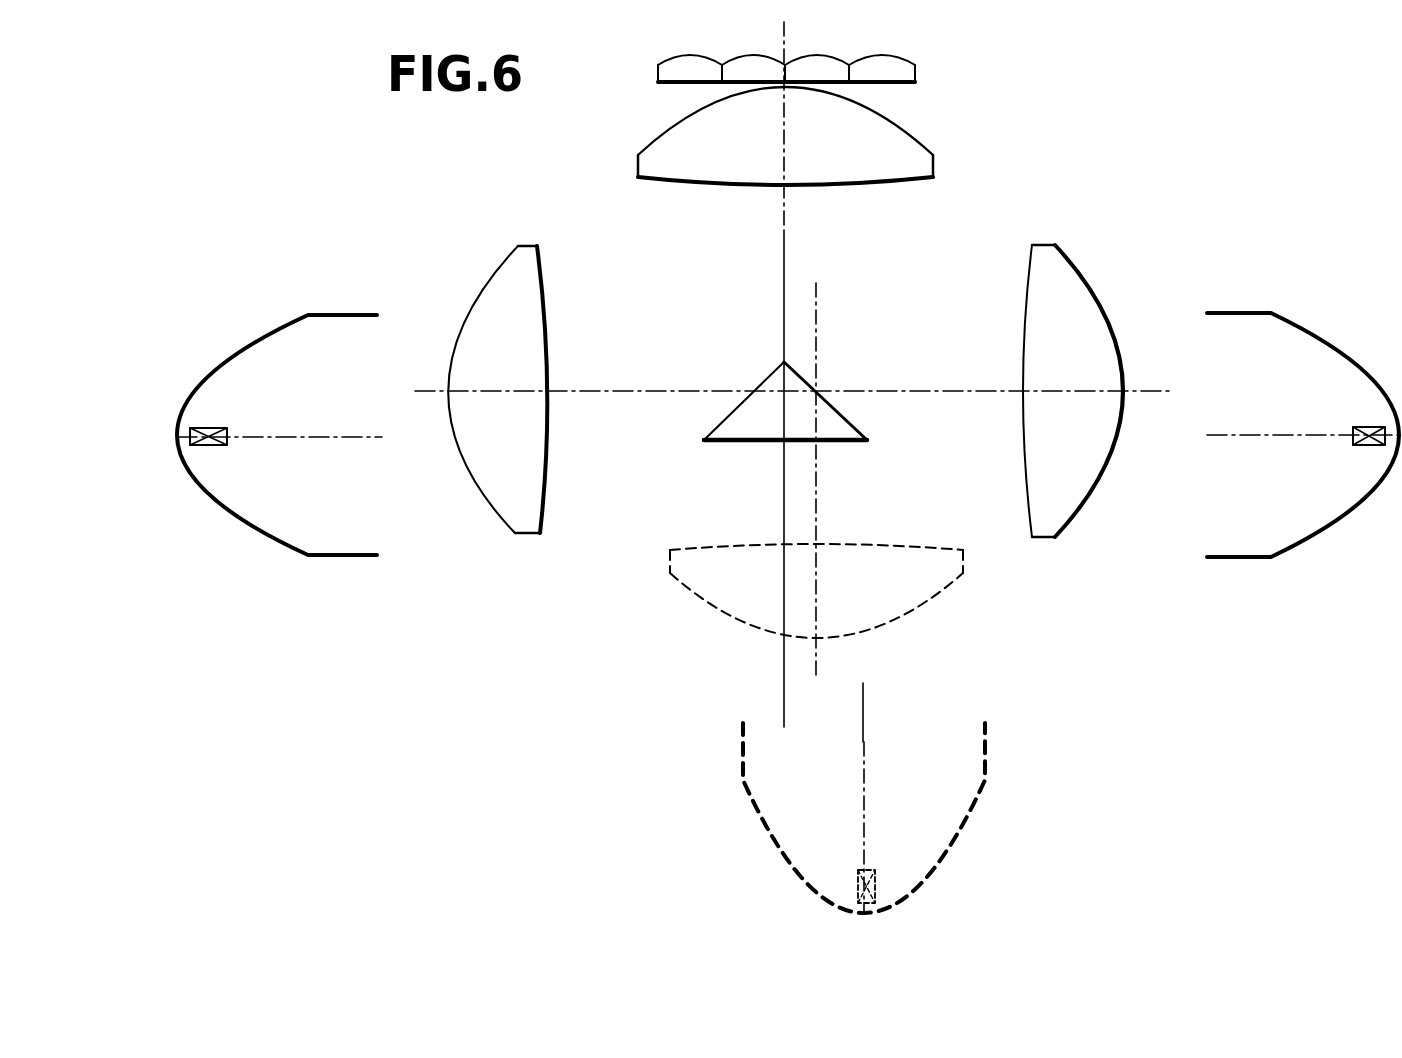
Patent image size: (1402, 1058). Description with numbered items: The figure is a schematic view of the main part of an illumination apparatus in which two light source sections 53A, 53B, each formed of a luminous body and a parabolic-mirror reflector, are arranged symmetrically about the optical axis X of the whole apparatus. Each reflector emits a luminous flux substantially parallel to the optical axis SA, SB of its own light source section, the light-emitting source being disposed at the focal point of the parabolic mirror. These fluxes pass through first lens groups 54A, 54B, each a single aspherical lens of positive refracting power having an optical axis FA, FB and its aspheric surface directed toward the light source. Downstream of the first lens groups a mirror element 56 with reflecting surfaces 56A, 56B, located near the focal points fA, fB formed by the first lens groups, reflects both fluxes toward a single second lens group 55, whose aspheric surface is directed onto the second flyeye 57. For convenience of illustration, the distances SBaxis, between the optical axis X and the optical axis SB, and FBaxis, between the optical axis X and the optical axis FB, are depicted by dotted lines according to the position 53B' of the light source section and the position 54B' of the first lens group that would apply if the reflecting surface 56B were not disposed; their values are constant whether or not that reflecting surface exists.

The light source section 53A is at (279, 404).
The light source section 53B is at (1303, 400).
The position of the light source section 53B' is at (914, 818).
The first lens group 54A is at (512, 272).
The first lens group 54B is at (1073, 365).
The position of the first lens group 54B' is at (848, 591).
The second lens group 55 is at (910, 152).
The mirror element 56 is at (786, 426).
The reflecting surface 56A is at (715, 422).
The reflecting surface 56B is at (850, 412).
The second flyeye 57 is at (905, 73).
The optical axis of the light source section SA is at (288, 443).
The optical axis of the light source section SB is at (1240, 437).
The optical axis of the first lens group FA is at (585, 390).
The optical axis of the first lens group FB is at (953, 390).
The focal point fA is at (752, 390).
The focal point fB is at (817, 390).
The optical axis X is at (786, 208).
The distance between the optical axis X and the optical axis FB FBaxis is at (730, 302).
The distance between the optical axis X and the optical axis SB SBaxis is at (863, 705).